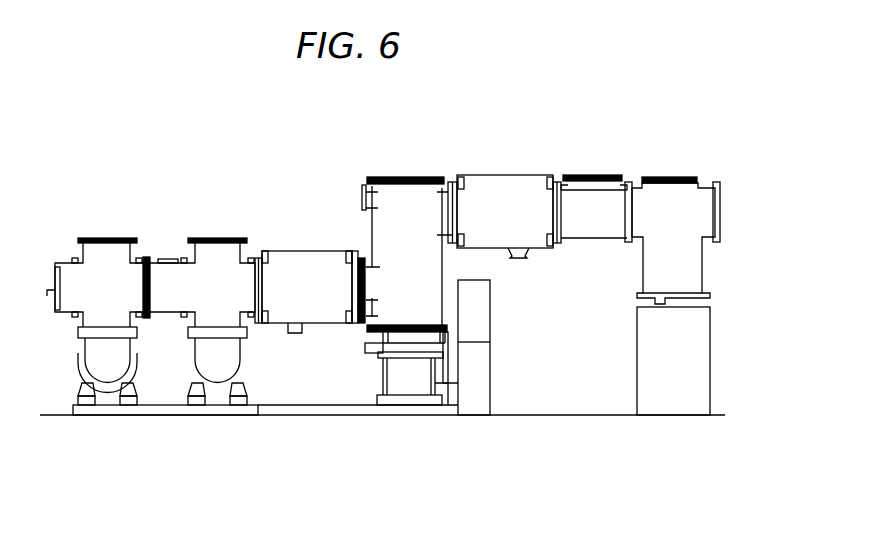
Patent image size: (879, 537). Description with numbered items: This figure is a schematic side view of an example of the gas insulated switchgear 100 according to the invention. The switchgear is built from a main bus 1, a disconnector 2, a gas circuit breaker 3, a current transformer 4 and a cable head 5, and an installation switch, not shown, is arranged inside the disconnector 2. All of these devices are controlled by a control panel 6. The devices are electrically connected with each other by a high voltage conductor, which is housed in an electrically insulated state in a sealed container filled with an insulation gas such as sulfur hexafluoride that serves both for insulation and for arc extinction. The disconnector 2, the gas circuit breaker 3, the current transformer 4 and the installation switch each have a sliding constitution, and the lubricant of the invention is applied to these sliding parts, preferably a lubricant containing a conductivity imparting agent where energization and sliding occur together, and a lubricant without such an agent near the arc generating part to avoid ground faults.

The gas insulated switchgear 100 is at (388, 115).
The main bus 1 is at (221, 383).
The disconnector 2 is at (218, 240).
The gas circuit breaker 3 is at (418, 177).
The current transformer 4 is at (520, 175).
The cable head 5 is at (665, 177).
The control panel 6 is at (490, 316).